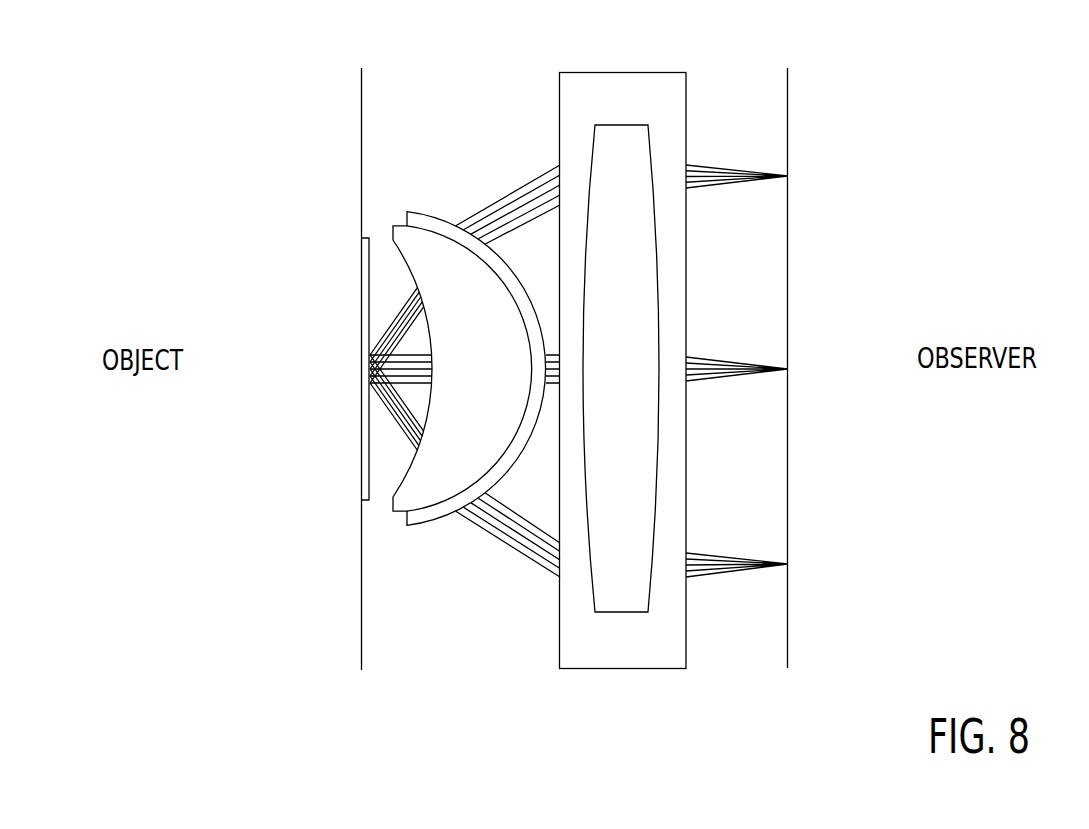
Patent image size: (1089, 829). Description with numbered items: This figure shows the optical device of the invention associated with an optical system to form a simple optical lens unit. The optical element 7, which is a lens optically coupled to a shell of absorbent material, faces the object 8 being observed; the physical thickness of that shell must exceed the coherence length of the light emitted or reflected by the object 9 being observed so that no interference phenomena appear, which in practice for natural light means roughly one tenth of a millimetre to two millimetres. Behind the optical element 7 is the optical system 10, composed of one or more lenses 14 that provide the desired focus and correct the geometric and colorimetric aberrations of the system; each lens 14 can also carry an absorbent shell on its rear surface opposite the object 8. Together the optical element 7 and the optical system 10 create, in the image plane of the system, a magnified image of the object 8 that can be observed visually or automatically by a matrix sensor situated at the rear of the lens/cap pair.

The optical element 7 is at (432, 248).
The object 8 is at (368, 295).
The object being observed 9 is at (360, 203).
The optical system 10 is at (673, 463).
The lenses 14 is at (634, 258).